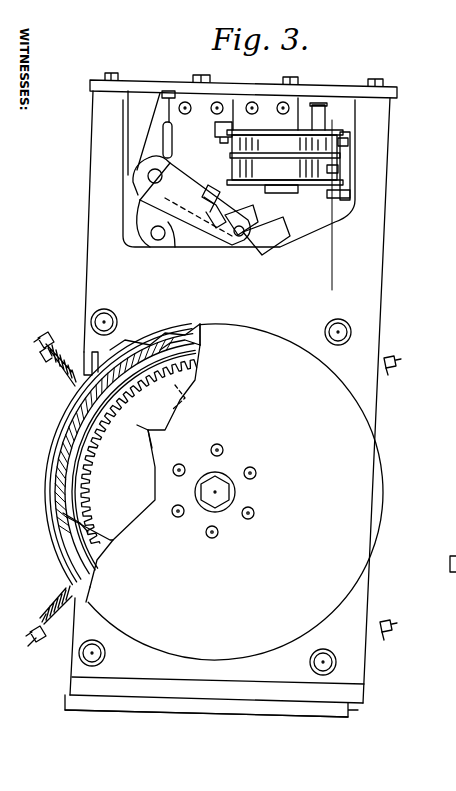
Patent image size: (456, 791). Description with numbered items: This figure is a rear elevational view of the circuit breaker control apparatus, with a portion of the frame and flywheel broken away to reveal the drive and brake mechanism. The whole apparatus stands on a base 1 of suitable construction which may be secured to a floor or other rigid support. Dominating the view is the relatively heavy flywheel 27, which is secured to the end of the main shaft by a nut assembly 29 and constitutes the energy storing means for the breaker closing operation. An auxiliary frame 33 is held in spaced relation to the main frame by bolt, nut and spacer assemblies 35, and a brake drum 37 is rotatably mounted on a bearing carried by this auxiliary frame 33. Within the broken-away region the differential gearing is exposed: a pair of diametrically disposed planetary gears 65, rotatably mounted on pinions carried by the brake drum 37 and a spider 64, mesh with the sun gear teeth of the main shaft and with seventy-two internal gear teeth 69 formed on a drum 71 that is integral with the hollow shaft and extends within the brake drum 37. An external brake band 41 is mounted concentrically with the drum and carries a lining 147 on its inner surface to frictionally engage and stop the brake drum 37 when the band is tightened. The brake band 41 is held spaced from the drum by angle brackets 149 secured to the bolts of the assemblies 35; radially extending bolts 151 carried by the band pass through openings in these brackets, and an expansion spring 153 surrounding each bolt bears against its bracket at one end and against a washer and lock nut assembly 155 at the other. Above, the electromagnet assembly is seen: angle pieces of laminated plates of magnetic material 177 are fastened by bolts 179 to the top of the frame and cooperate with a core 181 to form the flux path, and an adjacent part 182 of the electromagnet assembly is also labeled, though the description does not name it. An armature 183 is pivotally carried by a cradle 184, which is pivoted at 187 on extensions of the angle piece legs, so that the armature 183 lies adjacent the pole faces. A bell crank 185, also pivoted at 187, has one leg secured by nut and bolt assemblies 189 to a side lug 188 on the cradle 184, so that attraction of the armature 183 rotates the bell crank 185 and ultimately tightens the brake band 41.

The base 1 is at (158, 712).
The flywheel 27 is at (378, 484).
The nut assembly 29 is at (218, 492).
The auxiliary frame 33 is at (378, 237).
The bolt, nut and spacer assemblies 35 is at (342, 323).
The brake drum 37 is at (160, 346).
The brake band 41 is at (52, 460).
The spider 64 is at (140, 435).
The planetary gears 65 is at (168, 394).
The internal gear teeth 69 is at (112, 430).
The drum 71 is at (84, 494).
The lining 147 is at (58, 445).
The angle brackets 149 is at (88, 360).
The bolts 151 is at (40, 336).
The expansion spring 153 is at (62, 370).
The washer and lock nut assembly 155 is at (40, 356).
The laminated plates of magnetic material 177 is at (228, 100).
The bolts 179 is at (256, 102).
The core 181 is at (282, 193).
The solenoid rod 182 is at (345, 140).
The armature 183 is at (270, 245).
The cradle 184 is at (140, 193).
The bell crank 185 is at (195, 215).
The pivot 187 is at (148, 176).
The side lug 188 is at (220, 216).
The nut and bolt assemblies 189 is at (165, 242).